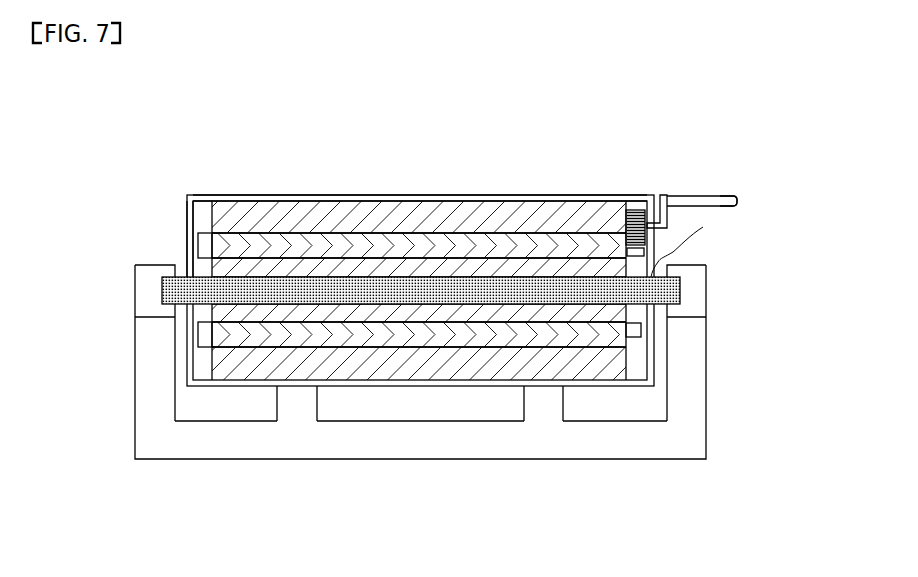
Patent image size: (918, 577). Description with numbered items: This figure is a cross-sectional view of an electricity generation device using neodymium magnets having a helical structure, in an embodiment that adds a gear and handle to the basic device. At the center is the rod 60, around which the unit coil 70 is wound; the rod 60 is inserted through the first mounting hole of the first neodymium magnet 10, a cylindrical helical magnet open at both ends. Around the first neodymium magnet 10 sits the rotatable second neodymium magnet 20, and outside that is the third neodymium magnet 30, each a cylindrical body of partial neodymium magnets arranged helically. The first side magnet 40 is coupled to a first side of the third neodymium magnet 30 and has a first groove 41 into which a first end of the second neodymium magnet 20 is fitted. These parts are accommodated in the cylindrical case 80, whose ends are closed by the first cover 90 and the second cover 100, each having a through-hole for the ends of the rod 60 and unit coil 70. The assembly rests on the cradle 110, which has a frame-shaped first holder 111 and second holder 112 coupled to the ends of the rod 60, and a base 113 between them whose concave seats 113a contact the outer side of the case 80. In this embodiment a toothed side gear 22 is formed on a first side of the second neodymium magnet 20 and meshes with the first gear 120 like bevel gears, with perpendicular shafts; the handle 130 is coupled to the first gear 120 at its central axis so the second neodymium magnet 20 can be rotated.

The first neodymium magnet 10 is at (310, 265).
The second neodymium magnet 20 is at (393, 262).
The side gear 22 is at (608, 227).
The third neodymium magnet 30 is at (470, 228).
The first side magnet 40 is at (190, 225).
The first groove 41 is at (208, 236).
The rod 60 is at (170, 293).
The unit coil 70 is at (183, 265).
The case 80 is at (559, 200).
The first cover 90 is at (189, 275).
The second cover 100 is at (648, 223).
The cradle 110 is at (427, 412).
The first holder 111 is at (145, 411).
The second holder 112 is at (687, 350).
The base 113 is at (405, 435).
The seats 113a is at (297, 407).
The first gear 120 is at (634, 207).
The handle 130 is at (737, 207).